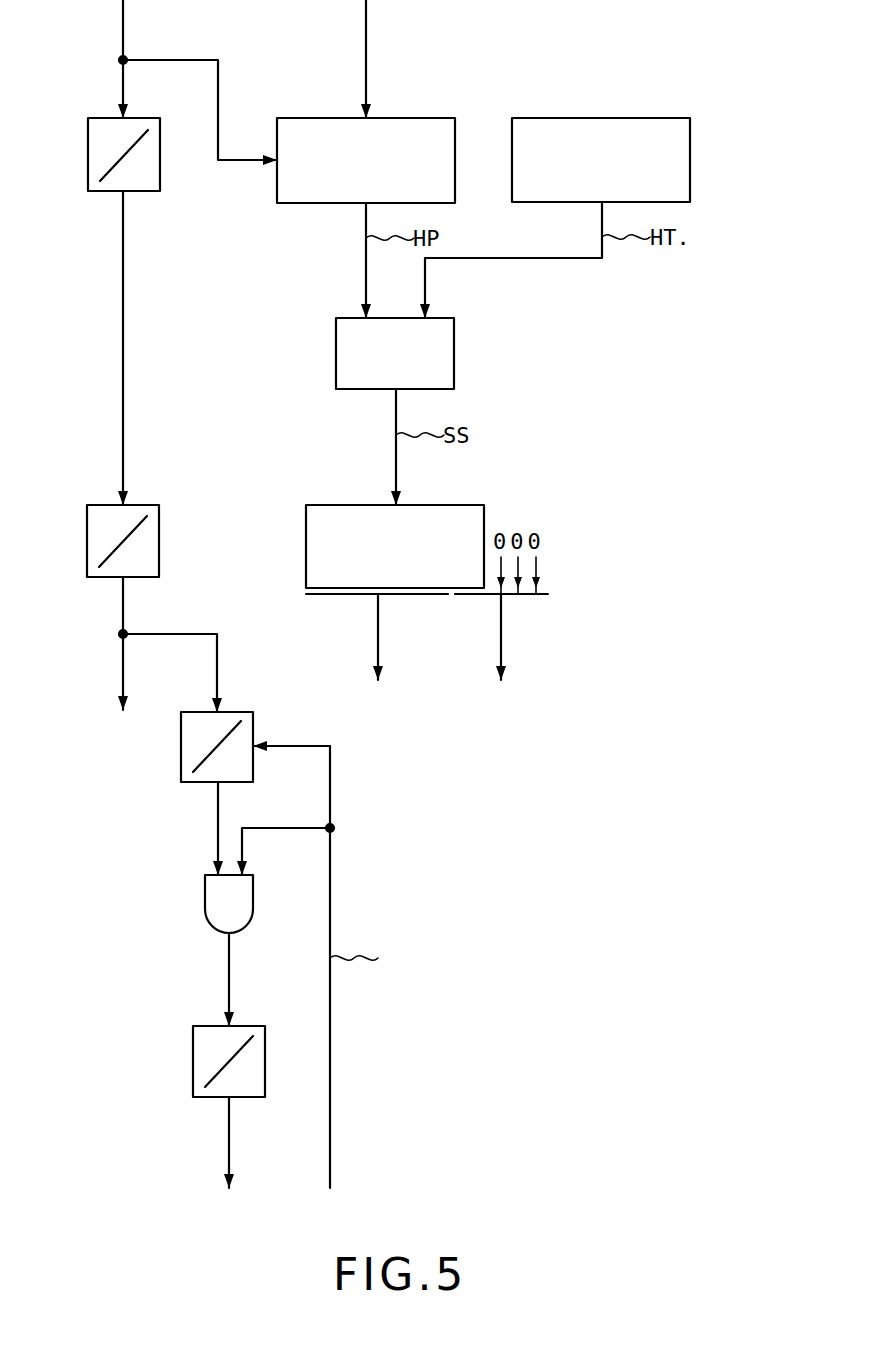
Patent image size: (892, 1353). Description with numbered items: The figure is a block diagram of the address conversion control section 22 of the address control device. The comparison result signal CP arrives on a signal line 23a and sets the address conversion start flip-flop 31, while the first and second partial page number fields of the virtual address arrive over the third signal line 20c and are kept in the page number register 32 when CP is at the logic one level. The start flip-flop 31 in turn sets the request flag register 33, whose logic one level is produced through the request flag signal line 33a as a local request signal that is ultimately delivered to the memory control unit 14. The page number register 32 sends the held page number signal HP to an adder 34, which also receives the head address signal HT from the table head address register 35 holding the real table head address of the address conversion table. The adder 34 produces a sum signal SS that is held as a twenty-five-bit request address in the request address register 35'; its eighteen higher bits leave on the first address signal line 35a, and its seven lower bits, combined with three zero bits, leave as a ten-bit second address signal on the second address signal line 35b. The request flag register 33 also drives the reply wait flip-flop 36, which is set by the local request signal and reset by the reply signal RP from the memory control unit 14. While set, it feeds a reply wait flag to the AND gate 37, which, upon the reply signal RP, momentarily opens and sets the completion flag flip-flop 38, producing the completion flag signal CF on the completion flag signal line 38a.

The memory control unit 14 is at (323, 980).
The address conversion control section 22 is at (573, 841).
The signal line 23a is at (123, 25).
The third signal line 20c is at (366, 25).
The address conversion start flip-flop 31 is at (145, 118).
The page number register 32 is at (403, 118).
The request flag register 33 is at (145, 505).
The request flag signal line 33a is at (123, 600).
The adder 34 is at (454, 350).
The table head address register 35 is at (601, 131).
The request address register 35' is at (427, 522).
The first address signal line 35a is at (378, 633).
The second address signal line 35b is at (501, 633).
The reply wait flip-flop 36 is at (235, 712).
The AND gate 37 is at (205, 897).
The completion flag flip-flop 38 is at (193, 1057).
The completion flag signal line 38a is at (229, 1132).